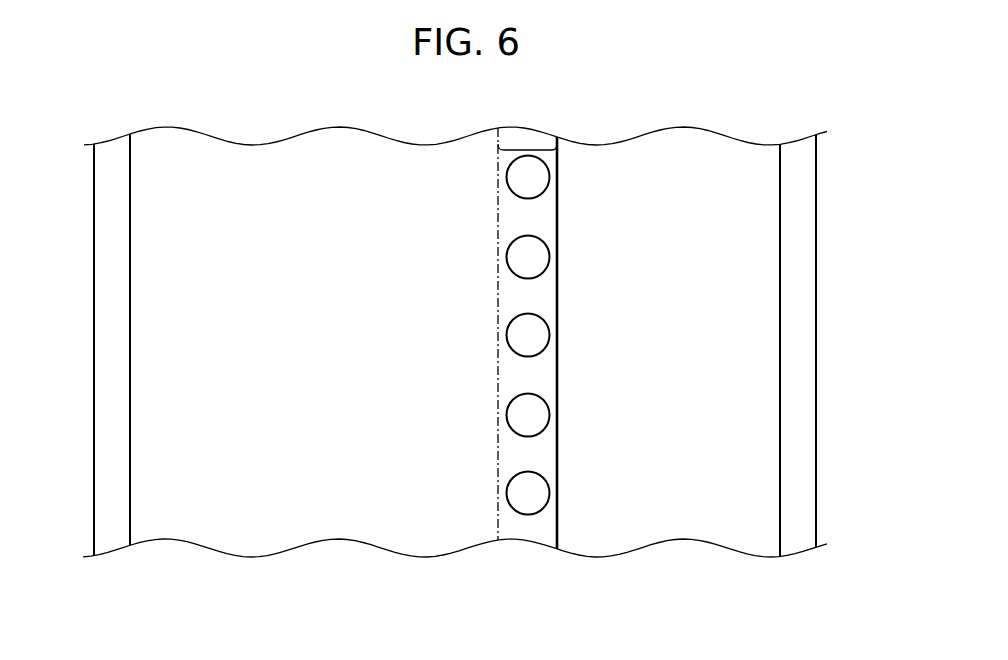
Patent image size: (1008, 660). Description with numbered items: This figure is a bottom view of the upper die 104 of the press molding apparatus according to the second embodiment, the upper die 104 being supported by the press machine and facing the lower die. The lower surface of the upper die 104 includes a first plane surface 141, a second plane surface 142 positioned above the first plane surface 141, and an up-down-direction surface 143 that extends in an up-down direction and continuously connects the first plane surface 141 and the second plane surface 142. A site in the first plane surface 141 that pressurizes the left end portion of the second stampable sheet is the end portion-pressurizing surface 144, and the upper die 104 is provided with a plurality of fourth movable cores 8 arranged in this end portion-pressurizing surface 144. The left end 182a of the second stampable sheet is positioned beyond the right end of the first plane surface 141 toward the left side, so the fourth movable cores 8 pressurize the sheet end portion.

The fourth movable core 8 is at (506, 172).
The upper die 104 is at (818, 377).
The first plane surface 141 is at (332, 518).
The second plane surface 142 is at (672, 520).
The up-down-direction surface 143 is at (558, 527).
The end portion-pressurizing surface 144 is at (527, 150).
The left end of second stampable sheet 182a is at (498, 218).